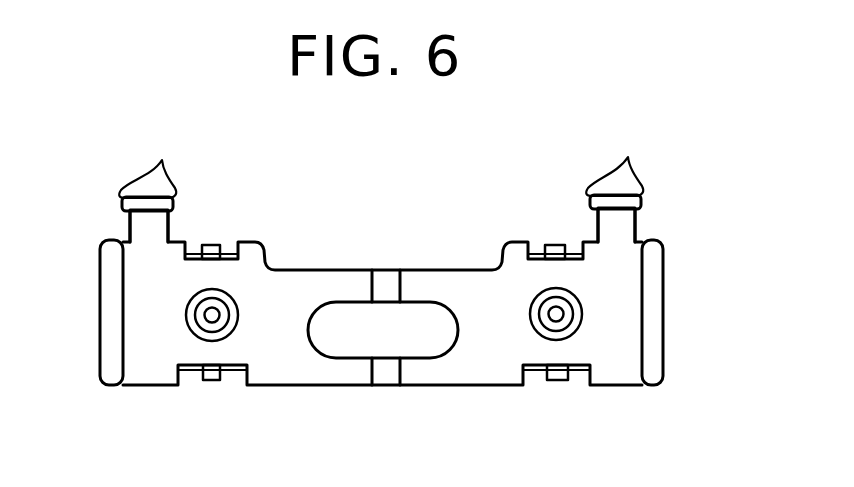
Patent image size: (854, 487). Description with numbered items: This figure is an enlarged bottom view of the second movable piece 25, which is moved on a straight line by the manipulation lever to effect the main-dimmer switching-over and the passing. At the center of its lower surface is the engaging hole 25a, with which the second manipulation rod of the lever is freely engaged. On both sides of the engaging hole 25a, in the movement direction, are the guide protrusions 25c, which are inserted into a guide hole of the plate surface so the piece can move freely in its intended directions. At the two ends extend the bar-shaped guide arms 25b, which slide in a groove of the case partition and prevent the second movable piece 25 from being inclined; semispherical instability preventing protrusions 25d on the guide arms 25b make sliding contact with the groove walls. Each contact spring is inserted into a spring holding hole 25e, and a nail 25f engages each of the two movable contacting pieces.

The second movable piece 25 is at (667, 298).
The engaging hole 25a is at (447, 333).
The guide arms 25b is at (158, 225).
The guide protrusions 25c is at (383, 373).
The instability preventing protrusions 25d is at (393, 160).
The spring holding hole 25e is at (200, 327).
The nail 25f is at (215, 257).